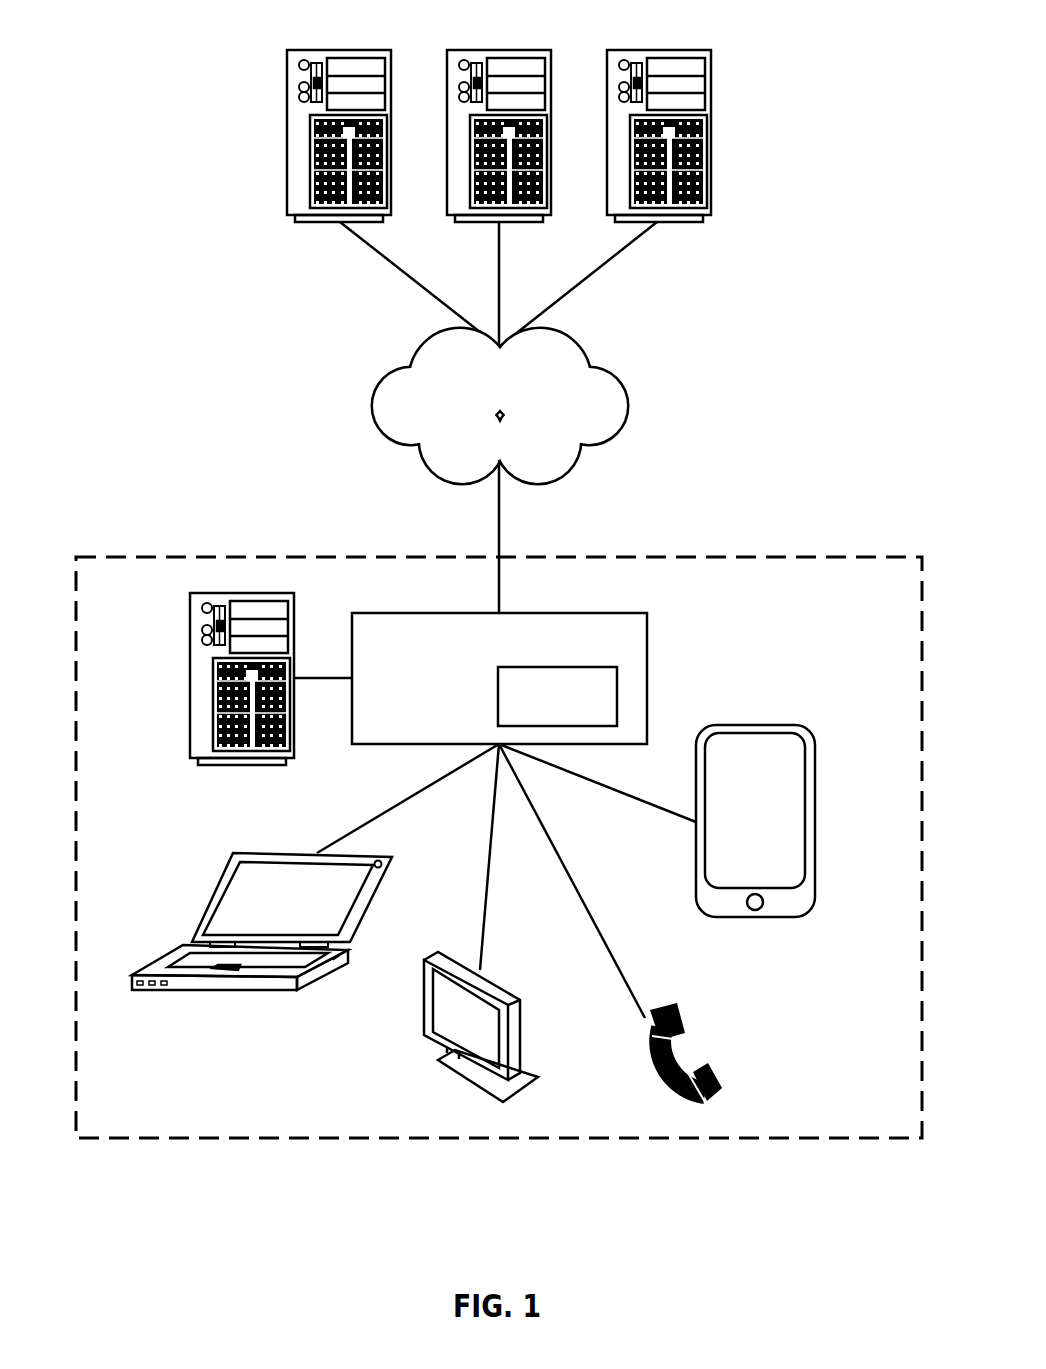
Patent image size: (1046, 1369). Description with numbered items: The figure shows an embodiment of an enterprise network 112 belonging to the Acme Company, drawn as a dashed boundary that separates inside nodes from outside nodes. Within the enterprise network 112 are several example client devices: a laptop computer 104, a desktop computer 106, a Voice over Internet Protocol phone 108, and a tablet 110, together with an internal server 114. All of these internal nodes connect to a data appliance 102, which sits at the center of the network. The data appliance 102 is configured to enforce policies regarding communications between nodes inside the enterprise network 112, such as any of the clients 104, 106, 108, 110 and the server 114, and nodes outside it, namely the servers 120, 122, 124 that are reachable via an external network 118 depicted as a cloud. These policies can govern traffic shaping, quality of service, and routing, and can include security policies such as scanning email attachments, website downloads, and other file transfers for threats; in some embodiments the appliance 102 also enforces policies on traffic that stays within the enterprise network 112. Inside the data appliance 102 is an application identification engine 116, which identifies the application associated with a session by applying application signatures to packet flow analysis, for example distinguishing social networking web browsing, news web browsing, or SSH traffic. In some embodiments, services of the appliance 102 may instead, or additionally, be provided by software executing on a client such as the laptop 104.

The data appliance 102 is at (535, 613).
The client device (laptop computer) 104 is at (370, 852).
The client device (desktop computer) 106 is at (498, 980).
The client device (VOIP phone) 108 is at (680, 1017).
The client device (tablet) 110 is at (815, 766).
The enterprise network 112 is at (500, 556).
The server 114 is at (294, 621).
The application identification engine 116 is at (617, 695).
The external network 118 is at (590, 366).
The server 120 is at (342, 50).
The server 122 is at (502, 50).
The server 124 is at (662, 50).